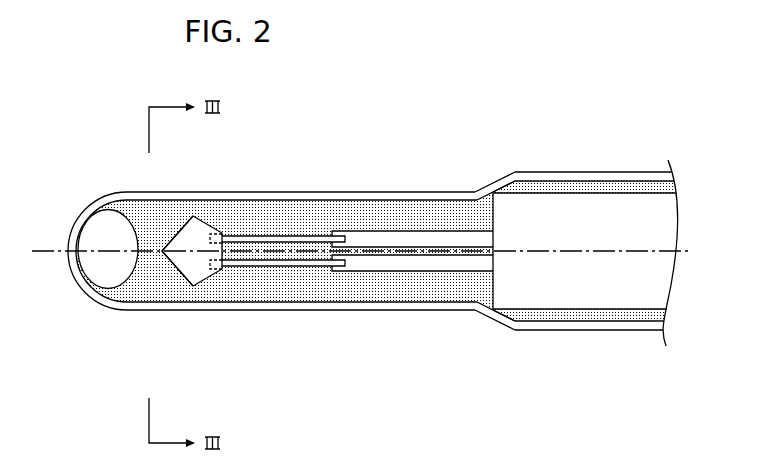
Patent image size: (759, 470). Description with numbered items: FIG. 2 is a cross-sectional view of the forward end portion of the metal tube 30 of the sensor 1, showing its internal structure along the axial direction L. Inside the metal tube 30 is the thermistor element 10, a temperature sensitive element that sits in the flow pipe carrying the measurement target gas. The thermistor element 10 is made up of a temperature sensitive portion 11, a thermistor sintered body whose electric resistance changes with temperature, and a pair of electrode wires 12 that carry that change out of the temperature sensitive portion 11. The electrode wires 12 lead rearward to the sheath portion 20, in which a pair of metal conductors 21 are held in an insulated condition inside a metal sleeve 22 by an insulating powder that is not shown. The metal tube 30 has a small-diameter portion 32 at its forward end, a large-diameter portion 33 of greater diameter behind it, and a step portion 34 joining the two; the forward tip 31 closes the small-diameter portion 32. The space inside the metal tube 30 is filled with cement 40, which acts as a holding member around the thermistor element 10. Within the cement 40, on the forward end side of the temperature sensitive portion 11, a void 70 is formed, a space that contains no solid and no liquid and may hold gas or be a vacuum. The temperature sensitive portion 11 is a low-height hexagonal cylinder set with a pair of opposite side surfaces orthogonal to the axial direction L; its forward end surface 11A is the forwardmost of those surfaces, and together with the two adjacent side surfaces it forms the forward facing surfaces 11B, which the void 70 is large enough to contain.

The electrode catheter 1 is at (89, 116).
The axial direction L is at (57, 250).
The thermistor element 10 is at (163, 364).
The temperature sensitive portion 11 is at (189, 289).
The forward end surface 11A is at (165, 257).
The forward facing surfaces 11B is at (175, 210).
The electrode wires 12 is at (250, 268).
The sheath portion 20 is at (573, 368).
The metal conductors 21 is at (456, 274).
The sleeve 22 is at (549, 310).
The metal tube 30 is at (538, 117).
The distal tip 31 is at (82, 279).
The small-diameter portion 32 is at (434, 196).
The large-diameter portion 33 is at (582, 171).
The step portion 34 is at (491, 185).
The cement 40 is at (364, 208).
The void 70 is at (104, 220).